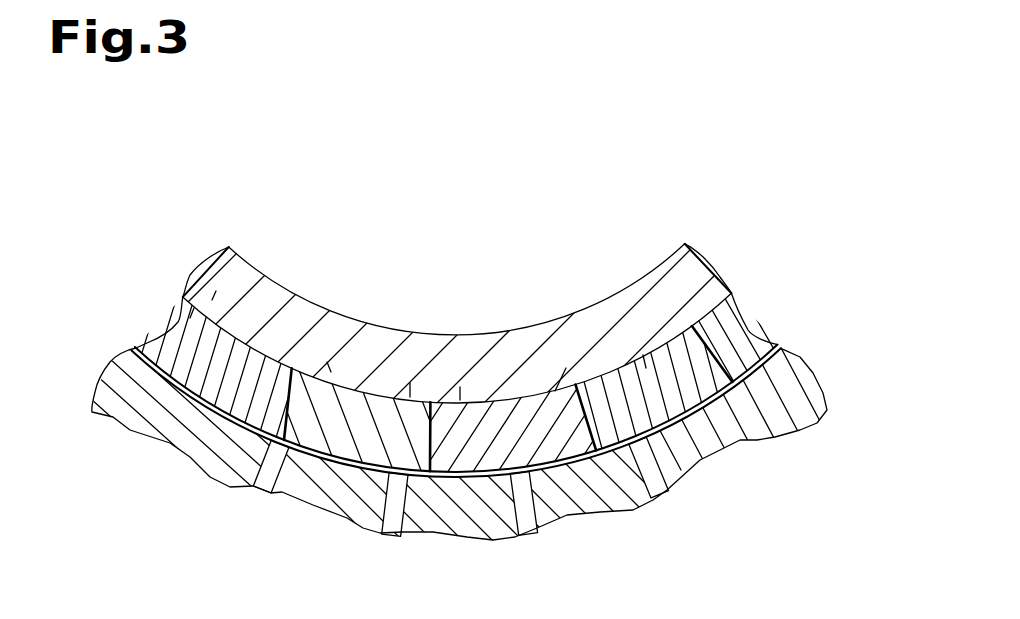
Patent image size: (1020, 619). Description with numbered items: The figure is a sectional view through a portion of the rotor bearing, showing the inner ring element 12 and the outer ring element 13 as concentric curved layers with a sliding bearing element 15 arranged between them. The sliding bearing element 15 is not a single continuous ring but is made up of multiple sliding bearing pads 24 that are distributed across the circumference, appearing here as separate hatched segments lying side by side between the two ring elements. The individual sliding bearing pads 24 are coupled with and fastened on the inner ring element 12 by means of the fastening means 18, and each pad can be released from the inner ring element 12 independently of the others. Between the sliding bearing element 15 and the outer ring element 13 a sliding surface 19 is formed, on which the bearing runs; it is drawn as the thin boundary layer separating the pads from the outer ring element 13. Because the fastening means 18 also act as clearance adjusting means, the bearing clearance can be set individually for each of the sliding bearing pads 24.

The inner ring element 12 is at (698, 270).
The outer ring element 13 is at (187, 443).
The second sliding bearing element 15 is at (566, 368).
The fastening means 18 is at (683, 357).
The sliding surface 19 is at (755, 372).
The sliding bearing pads 24 is at (730, 330).